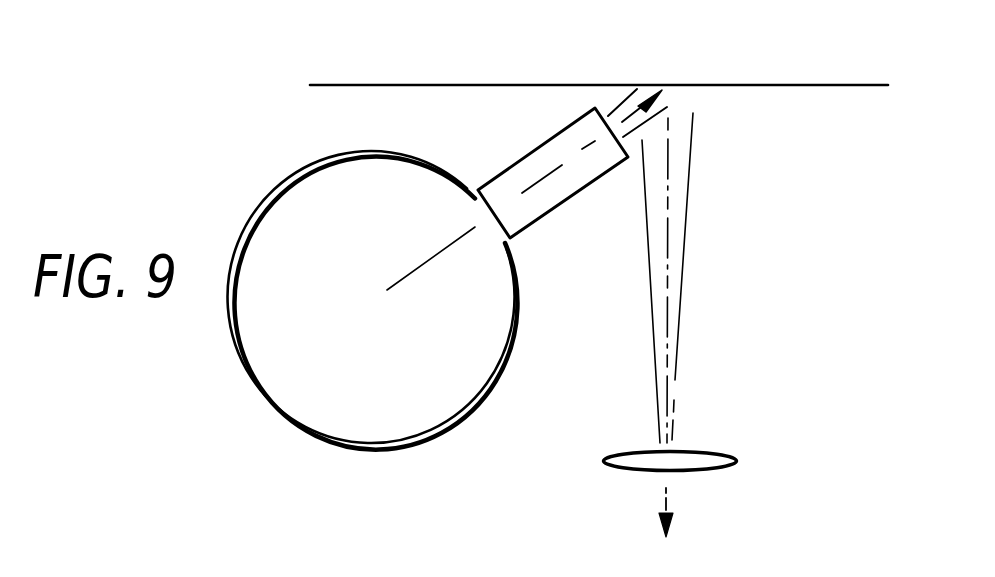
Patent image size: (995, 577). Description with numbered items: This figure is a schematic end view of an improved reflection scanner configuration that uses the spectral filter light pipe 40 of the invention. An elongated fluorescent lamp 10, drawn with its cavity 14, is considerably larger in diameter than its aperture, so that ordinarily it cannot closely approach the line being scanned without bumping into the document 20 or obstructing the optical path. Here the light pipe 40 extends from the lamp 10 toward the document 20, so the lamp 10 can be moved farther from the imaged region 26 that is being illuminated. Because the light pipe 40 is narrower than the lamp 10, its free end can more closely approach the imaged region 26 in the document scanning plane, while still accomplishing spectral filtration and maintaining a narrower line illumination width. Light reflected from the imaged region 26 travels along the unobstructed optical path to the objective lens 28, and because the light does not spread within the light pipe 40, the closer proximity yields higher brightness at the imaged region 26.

The fluorescent lamp 10 is at (245, 233).
The cavity 14 is at (363, 407).
The document 20 is at (398, 84).
The imaged region 26 is at (696, 74).
The objective lens 28 is at (722, 467).
The spectral filter light pipe 40 is at (557, 197).